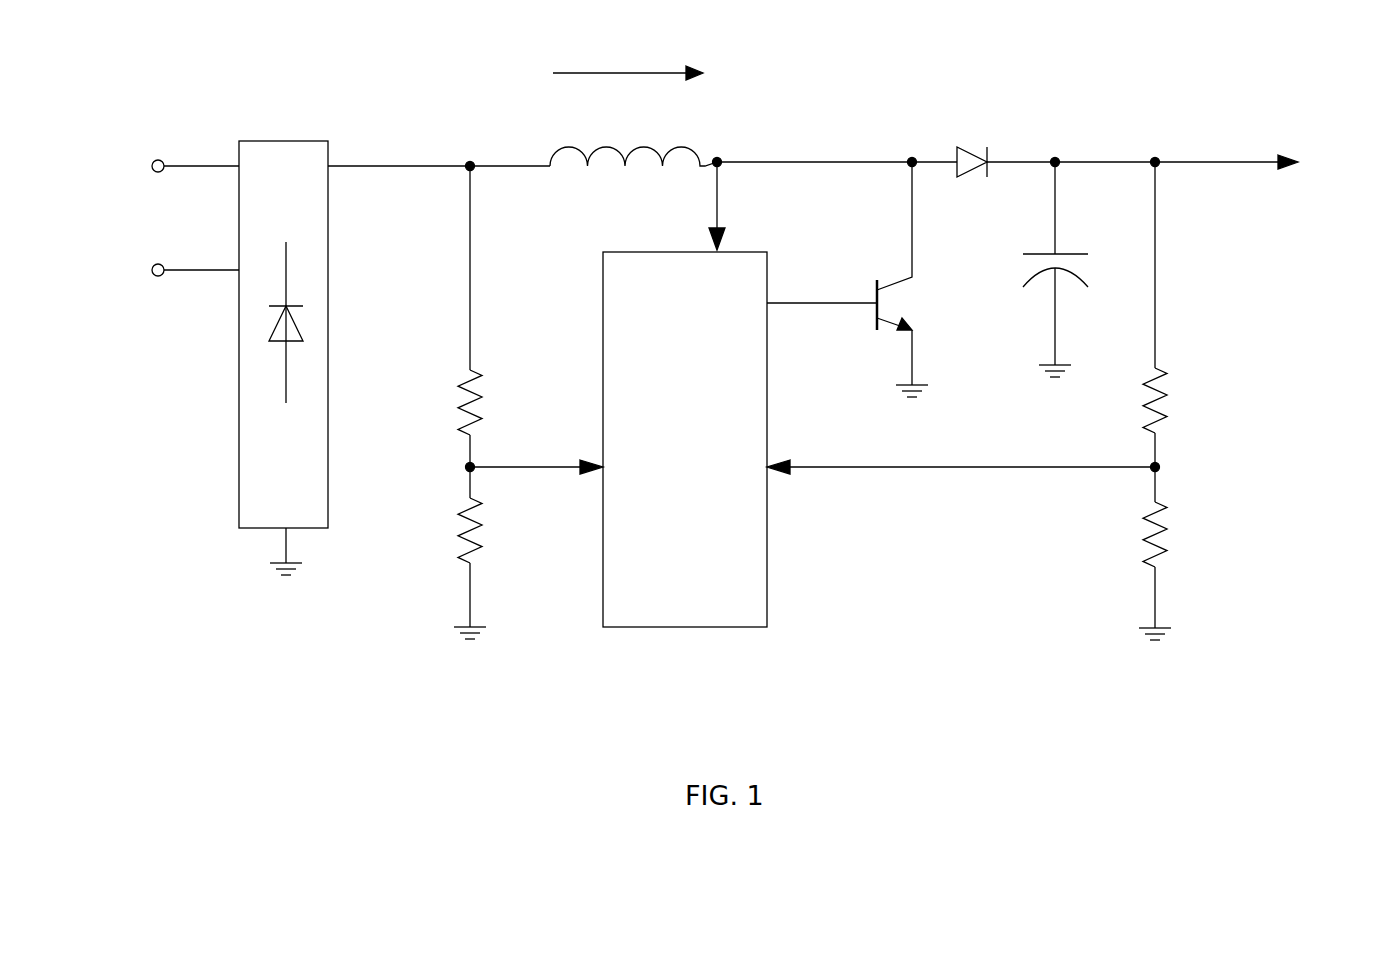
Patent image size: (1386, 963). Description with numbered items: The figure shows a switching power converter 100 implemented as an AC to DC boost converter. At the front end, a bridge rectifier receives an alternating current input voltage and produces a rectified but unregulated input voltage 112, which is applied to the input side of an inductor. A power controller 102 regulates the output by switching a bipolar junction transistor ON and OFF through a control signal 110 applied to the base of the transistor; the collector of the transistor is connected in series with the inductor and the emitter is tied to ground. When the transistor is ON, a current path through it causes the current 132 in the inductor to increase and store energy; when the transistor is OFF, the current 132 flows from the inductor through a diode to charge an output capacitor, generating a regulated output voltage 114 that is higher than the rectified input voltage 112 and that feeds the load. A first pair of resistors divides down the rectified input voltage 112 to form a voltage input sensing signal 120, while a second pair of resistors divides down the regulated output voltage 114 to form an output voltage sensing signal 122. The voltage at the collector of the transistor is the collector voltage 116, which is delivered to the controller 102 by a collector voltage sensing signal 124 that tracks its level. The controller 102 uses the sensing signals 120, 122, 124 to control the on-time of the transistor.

The switching power converter 100 is at (174, 58).
The controller 102 is at (685, 439).
The control signal 110 is at (798, 313).
The rectified input voltage 112 is at (432, 164).
The regulated output voltage 114 is at (1175, 158).
The collector voltage 116 is at (775, 159).
The voltage input sensing signal 120 is at (518, 456).
The output voltage sensing signal 122 is at (940, 458).
The collector voltage sensing signal 124 is at (727, 210).
The current 132 is at (628, 59).